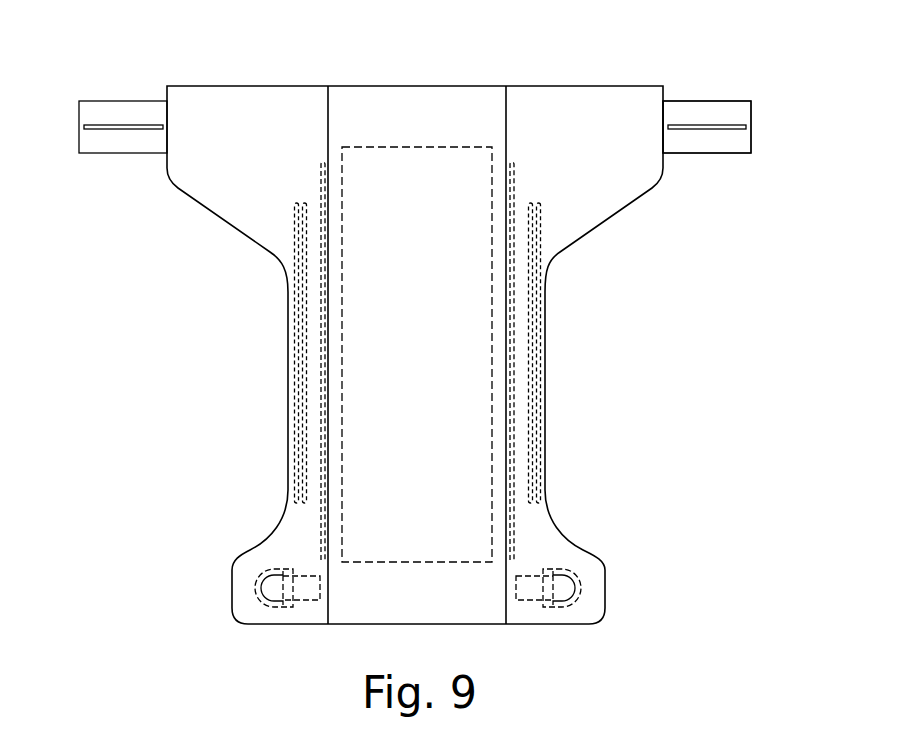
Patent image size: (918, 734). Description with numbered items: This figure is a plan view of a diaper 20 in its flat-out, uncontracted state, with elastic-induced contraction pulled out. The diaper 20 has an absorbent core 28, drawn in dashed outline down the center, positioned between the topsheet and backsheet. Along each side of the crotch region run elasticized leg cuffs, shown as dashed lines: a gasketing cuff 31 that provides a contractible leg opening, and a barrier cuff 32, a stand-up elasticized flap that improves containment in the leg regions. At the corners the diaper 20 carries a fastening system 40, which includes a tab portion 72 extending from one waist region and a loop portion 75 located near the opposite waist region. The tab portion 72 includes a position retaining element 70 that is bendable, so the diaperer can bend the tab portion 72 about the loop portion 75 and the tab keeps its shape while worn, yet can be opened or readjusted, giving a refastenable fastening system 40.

The diaper 20 is at (234, 349).
The absorbent core 28 is at (387, 147).
The gasketing cuff 31 is at (535, 323).
The barrier cuff 32 is at (512, 398).
The fastening system 40 is at (724, 173).
The position retaining element 70 is at (110, 126).
The tab portion 72 is at (112, 145).
The loop portion 75 is at (258, 574).